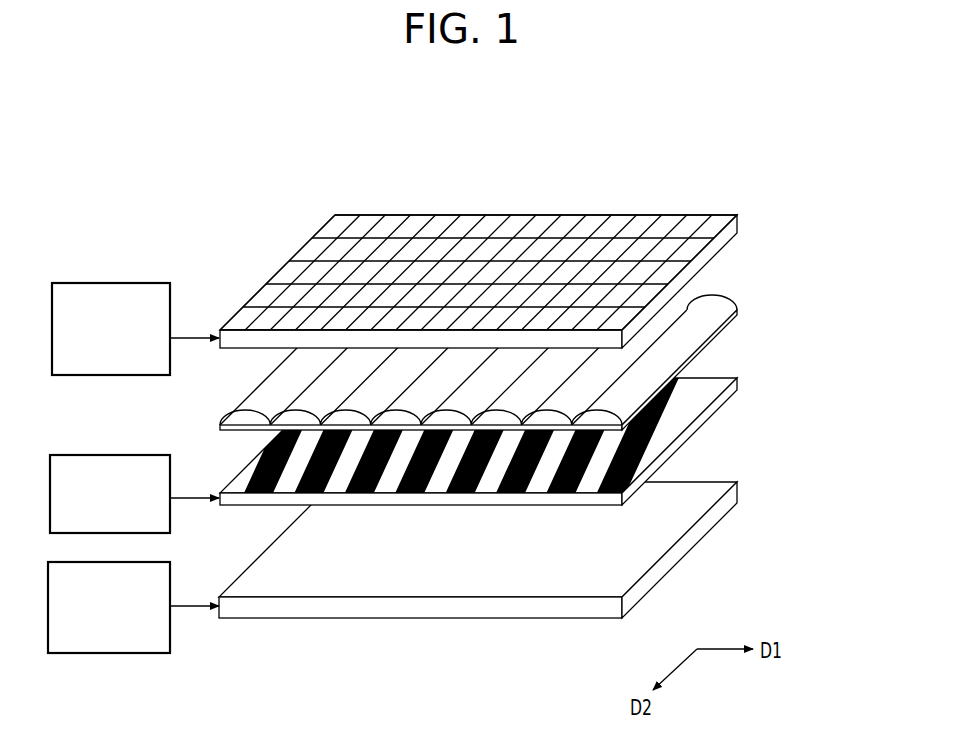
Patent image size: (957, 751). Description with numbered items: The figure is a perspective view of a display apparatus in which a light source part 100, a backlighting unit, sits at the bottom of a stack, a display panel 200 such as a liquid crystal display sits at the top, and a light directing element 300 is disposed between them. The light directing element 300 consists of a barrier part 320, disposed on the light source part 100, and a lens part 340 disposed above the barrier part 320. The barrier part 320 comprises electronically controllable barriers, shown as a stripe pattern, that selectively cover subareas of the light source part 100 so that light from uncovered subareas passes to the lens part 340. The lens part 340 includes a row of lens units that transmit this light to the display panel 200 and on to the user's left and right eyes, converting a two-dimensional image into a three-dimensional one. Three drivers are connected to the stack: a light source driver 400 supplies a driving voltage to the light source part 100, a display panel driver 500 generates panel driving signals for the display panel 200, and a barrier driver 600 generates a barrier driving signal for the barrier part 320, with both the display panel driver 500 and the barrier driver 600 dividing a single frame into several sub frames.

The light source part 100 is at (738, 486).
The display panel 200 is at (739, 221).
The light directing element 300 is at (534, 398).
The barrier part 320 is at (739, 380).
The lens part 340 is at (739, 300).
The light source driver 400 is at (108, 653).
The display panel driver 500 is at (111, 283).
The barrier driver 600 is at (109, 455).